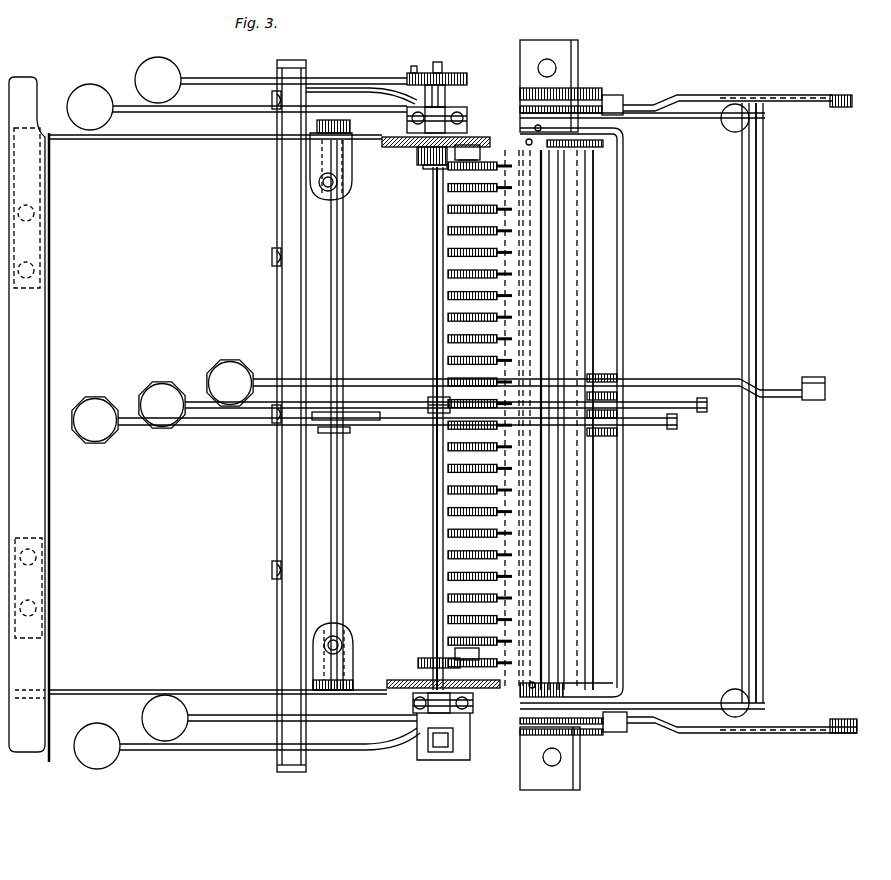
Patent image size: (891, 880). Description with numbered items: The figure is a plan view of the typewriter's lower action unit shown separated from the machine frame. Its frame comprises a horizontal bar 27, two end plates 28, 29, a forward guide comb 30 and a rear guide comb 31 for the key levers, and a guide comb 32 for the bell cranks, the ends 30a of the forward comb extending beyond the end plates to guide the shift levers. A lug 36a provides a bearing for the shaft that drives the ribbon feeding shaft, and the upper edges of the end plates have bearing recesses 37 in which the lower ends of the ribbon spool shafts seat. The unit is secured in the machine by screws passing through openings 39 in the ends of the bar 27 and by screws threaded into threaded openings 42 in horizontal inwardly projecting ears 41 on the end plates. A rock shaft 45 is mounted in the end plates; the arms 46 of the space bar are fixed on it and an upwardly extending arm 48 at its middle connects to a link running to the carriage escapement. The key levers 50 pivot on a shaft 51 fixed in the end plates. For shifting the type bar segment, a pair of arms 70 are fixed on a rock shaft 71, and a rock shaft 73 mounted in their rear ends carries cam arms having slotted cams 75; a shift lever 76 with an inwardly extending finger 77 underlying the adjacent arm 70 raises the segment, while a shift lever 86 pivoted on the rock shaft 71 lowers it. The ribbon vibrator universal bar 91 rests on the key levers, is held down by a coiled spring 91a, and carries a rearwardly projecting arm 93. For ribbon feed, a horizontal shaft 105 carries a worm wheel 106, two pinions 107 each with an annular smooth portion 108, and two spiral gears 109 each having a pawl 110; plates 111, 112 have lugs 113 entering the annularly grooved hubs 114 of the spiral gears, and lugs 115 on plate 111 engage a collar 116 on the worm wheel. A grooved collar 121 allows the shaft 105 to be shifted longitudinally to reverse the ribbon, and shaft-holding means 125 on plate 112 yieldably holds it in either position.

The horizontal bar 27 is at (588, 779).
The end plate 28 is at (380, 680).
The end plate 29 is at (578, 165).
The forward guide comb 30 is at (340, 331).
The ends of forward comb 30a is at (306, 70).
The rear guide comb 31 is at (594, 266).
The guide comb for bell cranks 32 is at (450, 243).
The lug 36a is at (437, 62).
The bearing recess 37 is at (531, 147).
The opening 39 is at (548, 58).
The ear 41 is at (342, 184).
The threaded opening 42 is at (340, 638).
The rock shaft 45 is at (340, 498).
The arm 46 is at (121, 140).
The upwardly extending arm 48 is at (416, 436).
The key lever 50 is at (100, 400).
The shaft 51 is at (572, 555).
The arm 70 is at (686, 120).
The rock shaft 71 is at (540, 494).
The rock shaft 73 is at (752, 529).
The slotted cam 75 is at (837, 102).
The shift lever 76 is at (196, 113).
The finger 77 is at (621, 104).
The shift lever 86 is at (200, 85).
The universal bar 91 is at (618, 333).
The coiled spring 91a is at (624, 683).
The rearwardly projecting arm 93 is at (783, 390).
The horizontal shaft 105 is at (436, 306).
The worm wheel 106 is at (442, 74).
The pinion 107 is at (432, 165).
The annular smooth portion 108 is at (422, 147).
The spiral gear 109 is at (481, 150).
The pawl 110 is at (447, 168).
The plate 111 is at (410, 119).
The plate 112 is at (473, 708).
The lug 113 is at (466, 126).
The annularly grooved hub 114 is at (468, 117).
The lug 115 is at (462, 112).
The collar 116 is at (395, 92).
The grooved collar 121 is at (434, 415).
The shaft-holding means 125 is at (463, 760).